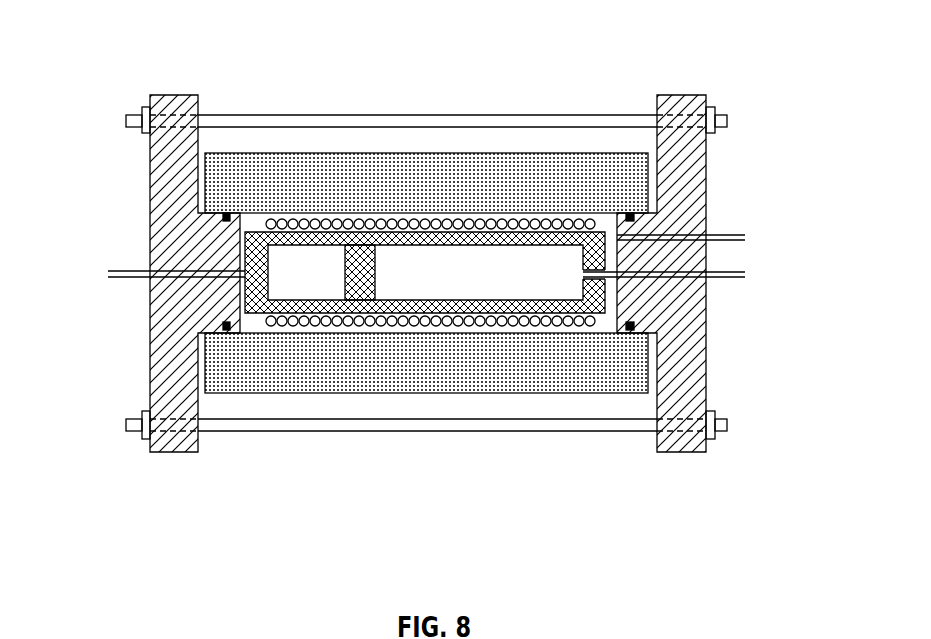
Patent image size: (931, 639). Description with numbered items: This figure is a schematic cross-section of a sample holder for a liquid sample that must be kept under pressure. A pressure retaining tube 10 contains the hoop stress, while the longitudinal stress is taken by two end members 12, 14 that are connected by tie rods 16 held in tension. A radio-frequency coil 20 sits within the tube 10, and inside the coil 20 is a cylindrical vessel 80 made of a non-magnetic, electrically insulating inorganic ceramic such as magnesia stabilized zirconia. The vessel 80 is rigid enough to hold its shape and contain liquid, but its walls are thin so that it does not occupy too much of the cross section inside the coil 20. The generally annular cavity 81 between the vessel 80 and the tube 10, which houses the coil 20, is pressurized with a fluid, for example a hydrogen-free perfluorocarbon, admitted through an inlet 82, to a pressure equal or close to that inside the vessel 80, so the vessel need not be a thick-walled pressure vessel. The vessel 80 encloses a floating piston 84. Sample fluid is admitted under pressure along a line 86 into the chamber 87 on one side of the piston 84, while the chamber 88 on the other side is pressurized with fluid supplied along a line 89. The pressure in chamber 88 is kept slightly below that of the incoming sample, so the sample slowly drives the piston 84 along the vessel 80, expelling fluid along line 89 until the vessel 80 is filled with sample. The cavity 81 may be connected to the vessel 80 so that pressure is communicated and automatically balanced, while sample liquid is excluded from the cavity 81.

The pressure retaining tube 10 is at (565, 545).
The end member 12 is at (170, 452).
The end member 14 is at (680, 452).
The tie rod 16 is at (637, 428).
The radio-frequency coil 20 is at (458, 326).
The cylindrical vessel 80 is at (392, 305).
The cavity 81 is at (257, 223).
The inlet 82 is at (726, 235).
The floating piston 84 is at (356, 278).
The line 86 is at (125, 270).
The chamber 87 is at (333, 263).
The chamber 88 is at (462, 265).
The line 89 is at (725, 279).